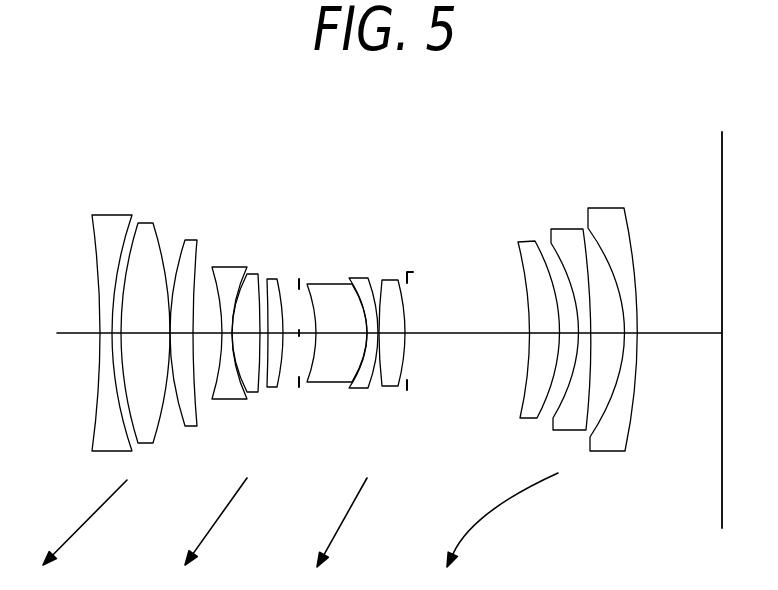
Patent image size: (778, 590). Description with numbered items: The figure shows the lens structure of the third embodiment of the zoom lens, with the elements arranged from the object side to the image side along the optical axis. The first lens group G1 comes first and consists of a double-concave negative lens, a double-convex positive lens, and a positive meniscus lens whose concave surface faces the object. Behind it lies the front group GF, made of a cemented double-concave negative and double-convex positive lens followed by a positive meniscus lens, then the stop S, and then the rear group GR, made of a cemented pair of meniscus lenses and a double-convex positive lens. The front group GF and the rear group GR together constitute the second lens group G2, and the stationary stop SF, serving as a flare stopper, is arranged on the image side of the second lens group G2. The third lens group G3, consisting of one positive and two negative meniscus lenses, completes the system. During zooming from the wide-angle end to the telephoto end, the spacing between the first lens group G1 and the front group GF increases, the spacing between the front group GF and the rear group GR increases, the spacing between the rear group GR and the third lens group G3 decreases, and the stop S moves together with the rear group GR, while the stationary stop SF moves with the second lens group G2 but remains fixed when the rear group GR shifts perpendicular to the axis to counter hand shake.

The first lens group G1 is at (197, 201).
The second lens group G2 is at (329, 240).
The front group GF is at (280, 254).
The rear group GR is at (402, 254).
The stop S is at (299, 284).
The stationary stop SF is at (409, 273).
The third lens group G3 is at (627, 201).